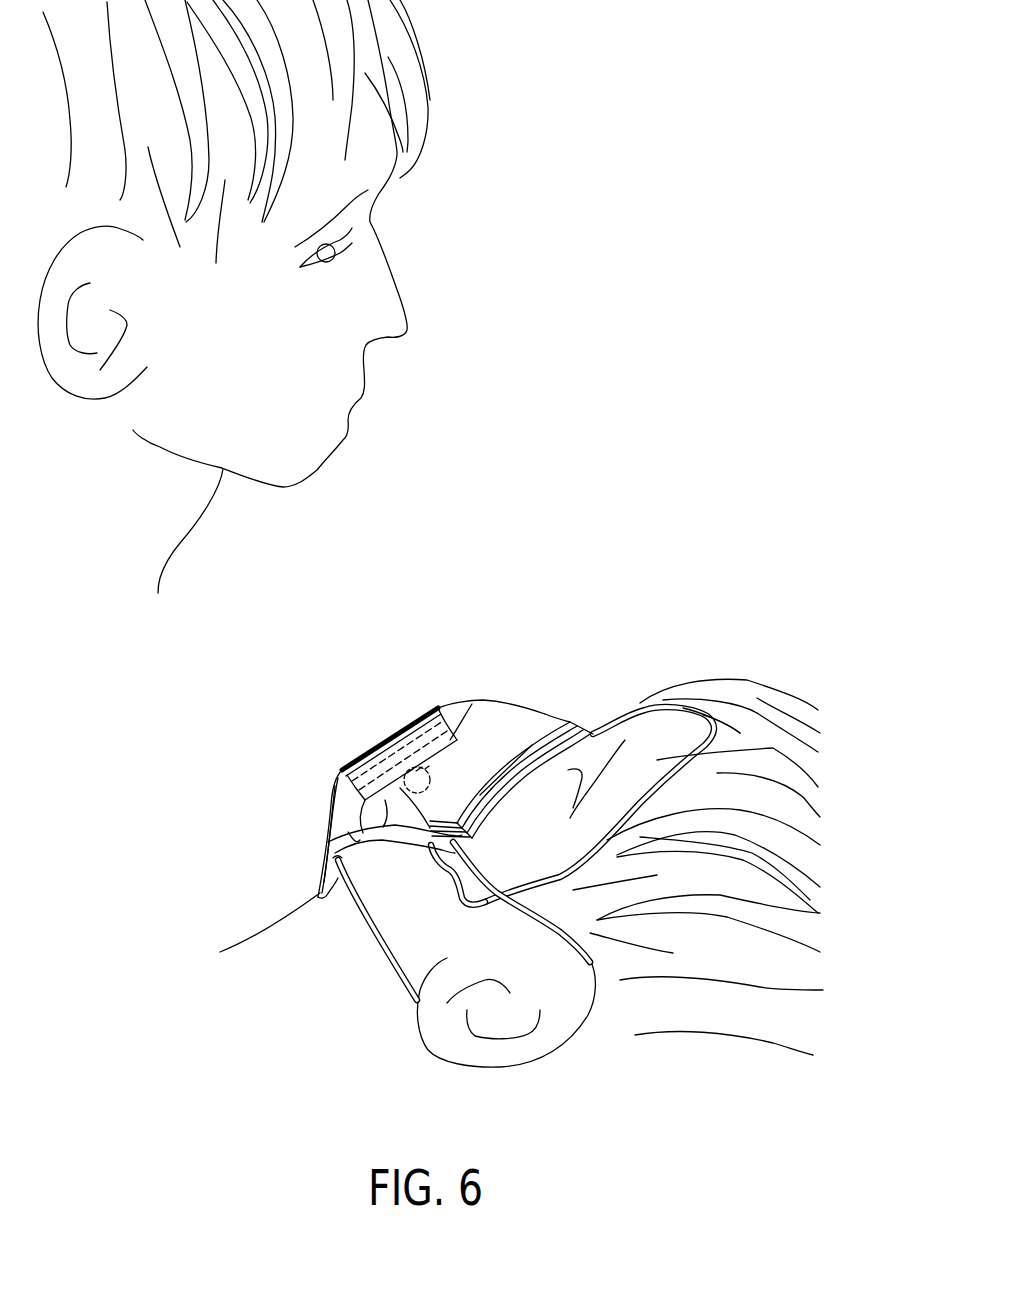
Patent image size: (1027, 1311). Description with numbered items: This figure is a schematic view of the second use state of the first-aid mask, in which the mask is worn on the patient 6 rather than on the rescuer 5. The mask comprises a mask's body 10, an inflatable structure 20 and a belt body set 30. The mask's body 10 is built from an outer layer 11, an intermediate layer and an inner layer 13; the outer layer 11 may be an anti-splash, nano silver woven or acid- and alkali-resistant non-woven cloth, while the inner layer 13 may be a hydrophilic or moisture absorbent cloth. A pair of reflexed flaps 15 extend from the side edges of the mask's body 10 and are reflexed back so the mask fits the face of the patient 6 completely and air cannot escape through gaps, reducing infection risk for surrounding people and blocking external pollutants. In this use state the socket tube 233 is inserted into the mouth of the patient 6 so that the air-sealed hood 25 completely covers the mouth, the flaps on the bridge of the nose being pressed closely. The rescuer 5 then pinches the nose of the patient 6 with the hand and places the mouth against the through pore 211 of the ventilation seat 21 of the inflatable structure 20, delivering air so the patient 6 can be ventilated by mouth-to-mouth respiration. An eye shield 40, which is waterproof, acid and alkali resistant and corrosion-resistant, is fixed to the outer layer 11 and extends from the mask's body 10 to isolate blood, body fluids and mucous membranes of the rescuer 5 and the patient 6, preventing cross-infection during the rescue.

The rescuer 5 is at (86, 540).
The patient 6 is at (222, 1056).
The mask's body 10 is at (317, 821).
The outer layer 11 is at (453, 713).
The inner layer 13 is at (530, 733).
The reflexed flaps 15 is at (360, 840).
The inflatable structure 20 is at (355, 745).
The ventilation seat 21 is at (396, 721).
The through pore 211 is at (385, 738).
The air-sealed hood 25 is at (433, 765).
The socket tube 233 is at (445, 777).
The belt body set 30 is at (383, 972).
The eye shield 40 is at (455, 880).